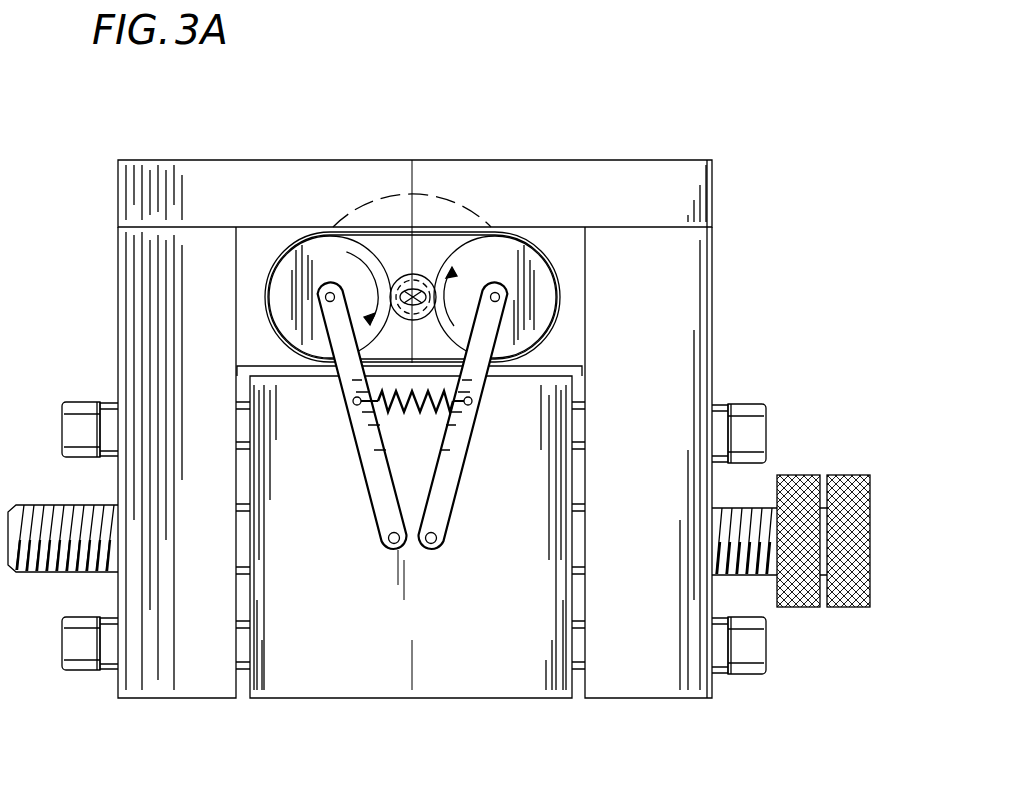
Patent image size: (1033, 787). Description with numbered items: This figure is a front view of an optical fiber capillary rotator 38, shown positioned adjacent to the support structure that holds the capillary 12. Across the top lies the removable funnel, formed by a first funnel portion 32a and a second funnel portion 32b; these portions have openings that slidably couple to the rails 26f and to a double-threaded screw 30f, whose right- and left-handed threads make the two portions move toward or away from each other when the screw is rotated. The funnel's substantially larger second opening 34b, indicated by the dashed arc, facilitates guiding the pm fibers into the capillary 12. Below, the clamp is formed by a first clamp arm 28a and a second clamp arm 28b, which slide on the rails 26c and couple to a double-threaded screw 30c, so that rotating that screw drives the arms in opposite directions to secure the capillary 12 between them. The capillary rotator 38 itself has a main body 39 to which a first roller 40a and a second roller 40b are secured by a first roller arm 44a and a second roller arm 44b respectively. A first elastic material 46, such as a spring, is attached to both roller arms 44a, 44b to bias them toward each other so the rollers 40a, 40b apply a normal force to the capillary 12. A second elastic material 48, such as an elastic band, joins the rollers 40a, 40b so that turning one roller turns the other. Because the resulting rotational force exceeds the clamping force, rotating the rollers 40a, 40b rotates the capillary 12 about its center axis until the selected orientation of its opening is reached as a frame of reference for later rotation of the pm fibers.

The optical fiber capillary rotator 38 is at (745, 124).
The first funnel portion 32a is at (190, 160).
The second funnel portion 32b is at (626, 160).
The first clamp arm 28a is at (118, 277).
The second clamp arm 28b is at (713, 268).
The main body 39 is at (496, 700).
The second opening 34b is at (448, 194).
The first roller 40a is at (272, 299).
The second roller 40b is at (542, 299).
The capillary 12 is at (399, 277).
The second elastic material 48 is at (420, 275).
The first roller arm 44a is at (365, 487).
The second roller arm 44b is at (458, 487).
The first elastic material 46 is at (409, 406).
The rails 26c is at (102, 410).
The rails 26f is at (66, 420).
The double-threaded screw 30c is at (798, 594).
The double-threaded screw 30f is at (855, 608).